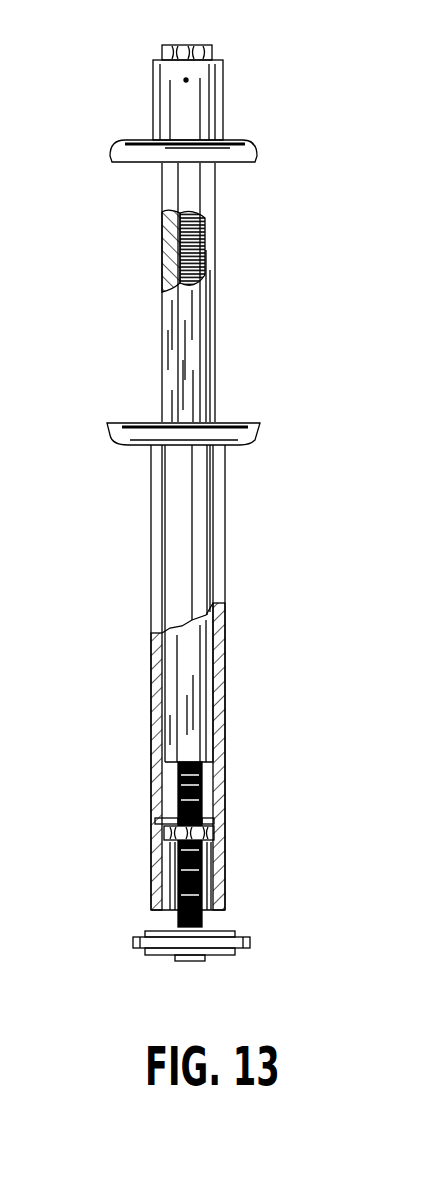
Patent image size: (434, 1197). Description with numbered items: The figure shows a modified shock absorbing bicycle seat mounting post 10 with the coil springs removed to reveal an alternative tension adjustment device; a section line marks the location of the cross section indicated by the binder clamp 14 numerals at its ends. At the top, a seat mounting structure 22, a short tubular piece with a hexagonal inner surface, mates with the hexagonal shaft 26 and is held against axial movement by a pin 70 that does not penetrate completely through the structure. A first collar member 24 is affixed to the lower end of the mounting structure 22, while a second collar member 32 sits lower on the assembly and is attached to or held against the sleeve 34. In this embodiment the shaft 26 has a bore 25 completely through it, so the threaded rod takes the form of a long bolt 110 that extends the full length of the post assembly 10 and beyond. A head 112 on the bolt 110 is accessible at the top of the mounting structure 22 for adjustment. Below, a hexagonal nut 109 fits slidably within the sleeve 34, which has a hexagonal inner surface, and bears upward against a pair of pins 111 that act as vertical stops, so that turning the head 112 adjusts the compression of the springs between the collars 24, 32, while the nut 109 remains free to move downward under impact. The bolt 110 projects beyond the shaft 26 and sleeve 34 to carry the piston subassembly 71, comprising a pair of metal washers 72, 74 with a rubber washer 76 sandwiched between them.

The seat mounting post 10 is at (278, 178).
The binder clamp 14 is at (315, 405).
The mounting structure 22 is at (223, 102).
The first collar member 24 is at (248, 149).
The bore 25 is at (178, 247).
The shaft 26 is at (212, 270).
The second collar member 32 is at (250, 438).
The sleeve 34 is at (226, 574).
The pin 70 is at (186, 80).
The subassembly (flexible piston means) 71 is at (132, 944).
The metal washer 72 is at (228, 931).
The metal washer 74 is at (224, 955).
The rubber washer 76 is at (252, 943).
The nut 109 is at (176, 858).
The bolt 110 is at (205, 224).
The pins 111 is at (172, 819).
The head 112 is at (206, 45).